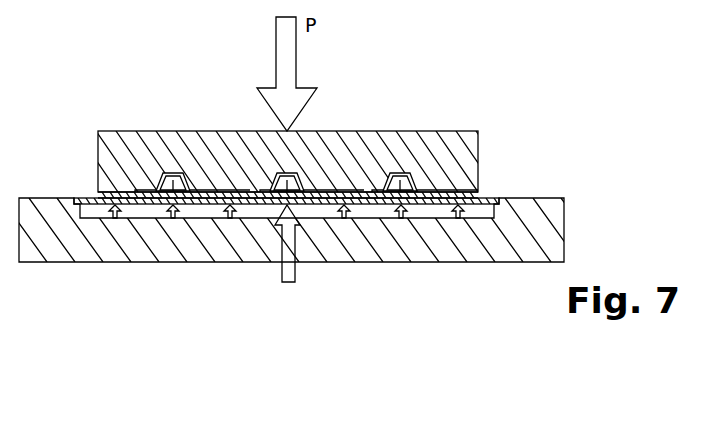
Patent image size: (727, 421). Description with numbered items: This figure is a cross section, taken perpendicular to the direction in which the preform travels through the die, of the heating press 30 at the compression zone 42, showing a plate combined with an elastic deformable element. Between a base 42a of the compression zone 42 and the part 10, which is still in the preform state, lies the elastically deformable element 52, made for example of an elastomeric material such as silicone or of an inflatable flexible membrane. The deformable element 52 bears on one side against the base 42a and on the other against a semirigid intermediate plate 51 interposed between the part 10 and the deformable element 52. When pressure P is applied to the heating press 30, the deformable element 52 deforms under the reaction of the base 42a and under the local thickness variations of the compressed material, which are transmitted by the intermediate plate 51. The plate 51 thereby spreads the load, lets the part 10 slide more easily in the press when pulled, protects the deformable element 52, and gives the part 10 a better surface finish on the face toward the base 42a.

The part 10 is at (170, 194).
The heating press 30 is at (416, 121).
The semirigid intermediate plate 51 is at (87, 198).
The elastically deformable element 52 is at (105, 212).
The compression zone 42 is at (180, 270).
The base of the compression zone 42a is at (392, 248).